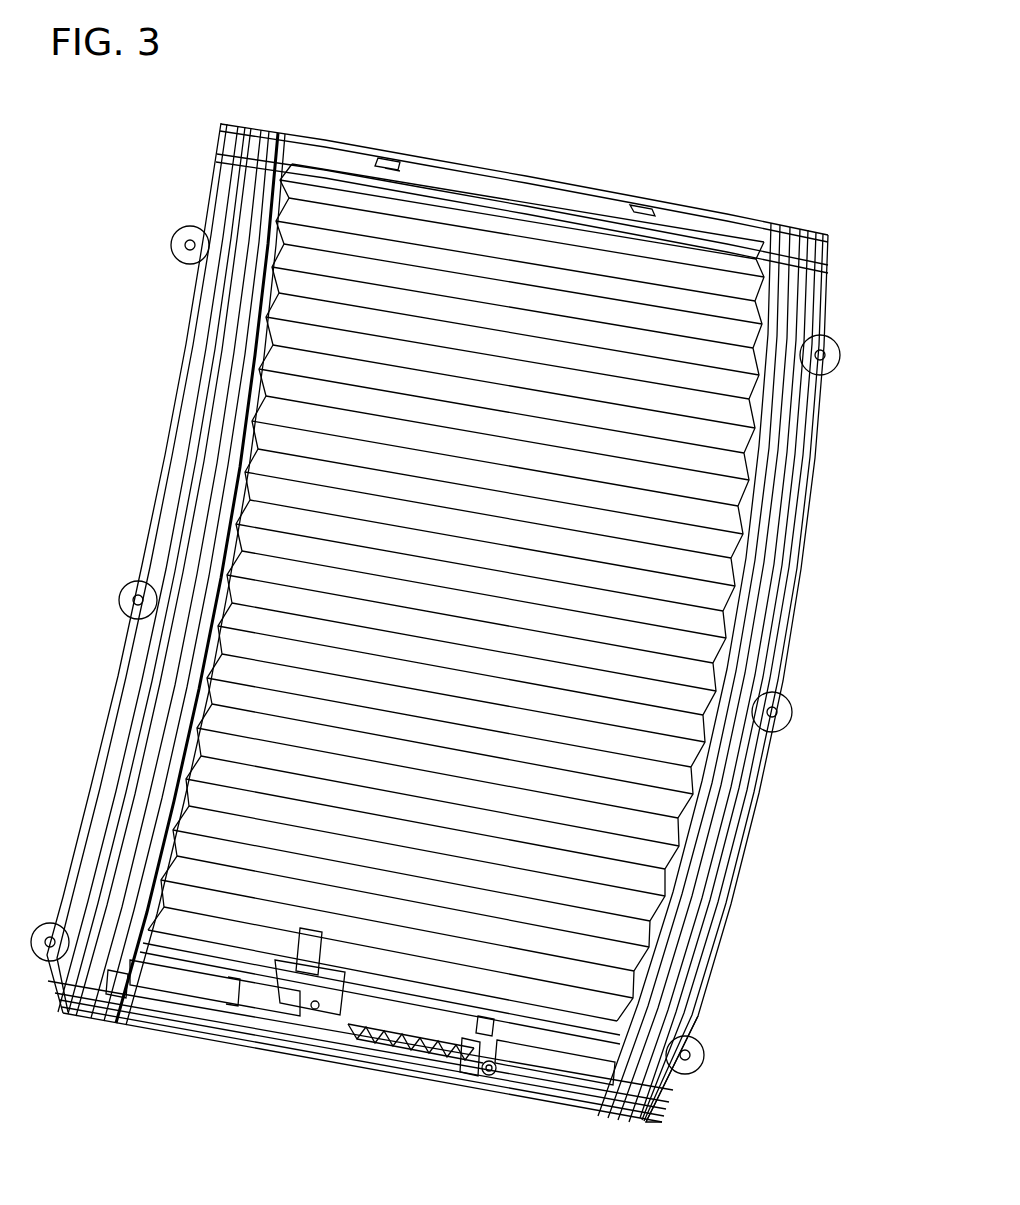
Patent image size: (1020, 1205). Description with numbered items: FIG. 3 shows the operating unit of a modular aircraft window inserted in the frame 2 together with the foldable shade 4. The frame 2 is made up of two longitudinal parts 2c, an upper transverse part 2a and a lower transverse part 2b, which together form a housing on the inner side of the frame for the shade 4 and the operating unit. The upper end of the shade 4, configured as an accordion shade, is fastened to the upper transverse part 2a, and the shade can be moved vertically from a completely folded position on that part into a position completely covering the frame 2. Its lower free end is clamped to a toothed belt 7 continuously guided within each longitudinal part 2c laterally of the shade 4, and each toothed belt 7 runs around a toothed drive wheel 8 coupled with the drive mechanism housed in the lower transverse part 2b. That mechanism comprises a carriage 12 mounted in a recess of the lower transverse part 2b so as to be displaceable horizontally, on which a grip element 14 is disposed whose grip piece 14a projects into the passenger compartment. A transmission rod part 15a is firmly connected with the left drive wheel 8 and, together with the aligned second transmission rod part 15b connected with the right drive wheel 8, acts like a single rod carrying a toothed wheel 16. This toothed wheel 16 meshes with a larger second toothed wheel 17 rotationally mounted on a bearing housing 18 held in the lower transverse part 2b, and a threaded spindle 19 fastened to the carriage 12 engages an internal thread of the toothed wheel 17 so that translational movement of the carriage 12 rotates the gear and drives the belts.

The frame 2 is at (573, 168).
The upper transverse part 2a is at (640, 207).
The lower transverse part 2b is at (550, 1112).
The longitudinal parts 2c is at (162, 650).
The foldable shade 4 is at (434, 288).
The toothed belt 7 is at (178, 746).
The toothed drive wheel 8 is at (117, 988).
The carriage 12 is at (284, 1046).
The grip element 14 is at (334, 1003).
The grip piece 14a is at (303, 947).
The transmission rod part 15a is at (187, 987).
The second transmission rod part 15b is at (606, 1062).
The toothed wheel 16 is at (483, 1022).
The second toothed wheel 17 is at (467, 1048).
The bearing housing 18 is at (488, 1062).
The threaded spindle 19 is at (400, 1052).